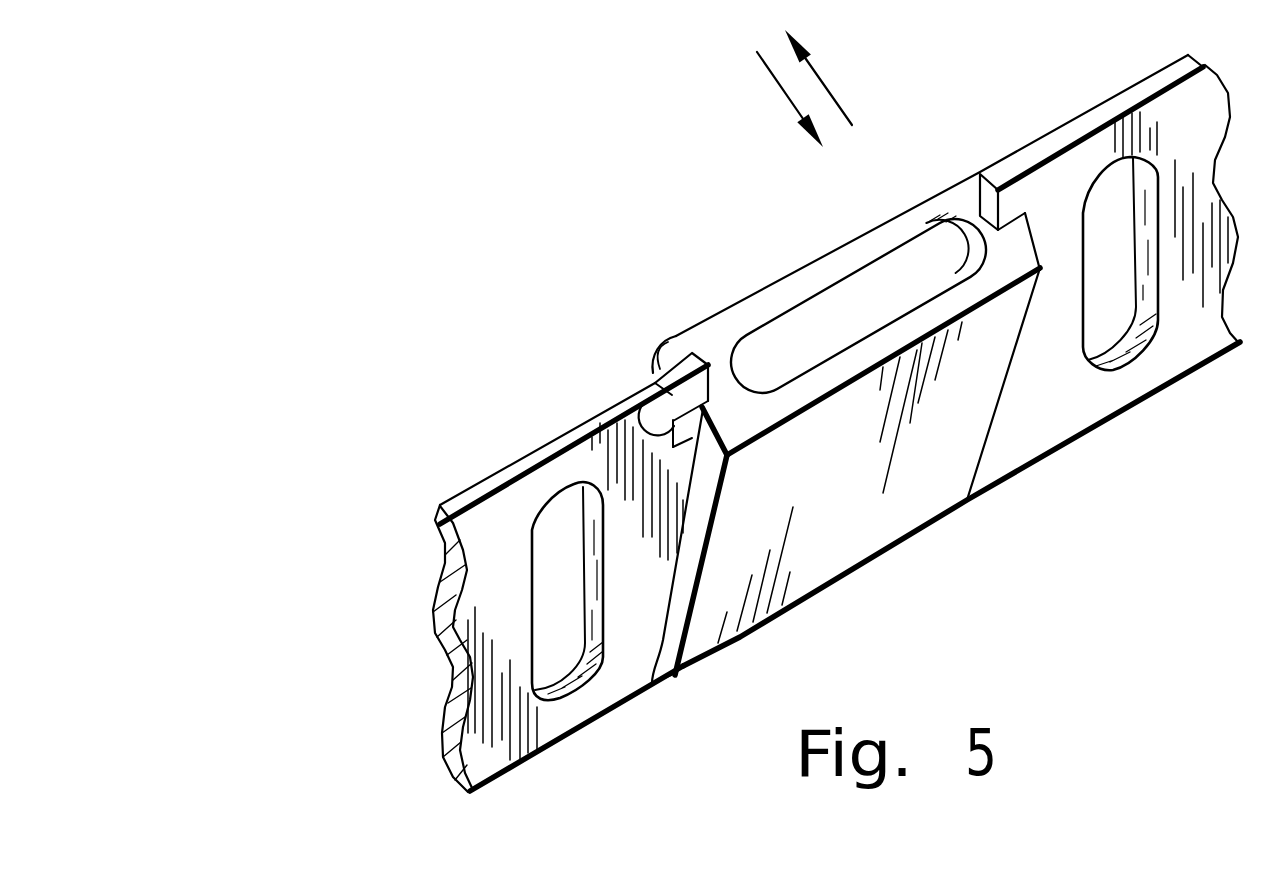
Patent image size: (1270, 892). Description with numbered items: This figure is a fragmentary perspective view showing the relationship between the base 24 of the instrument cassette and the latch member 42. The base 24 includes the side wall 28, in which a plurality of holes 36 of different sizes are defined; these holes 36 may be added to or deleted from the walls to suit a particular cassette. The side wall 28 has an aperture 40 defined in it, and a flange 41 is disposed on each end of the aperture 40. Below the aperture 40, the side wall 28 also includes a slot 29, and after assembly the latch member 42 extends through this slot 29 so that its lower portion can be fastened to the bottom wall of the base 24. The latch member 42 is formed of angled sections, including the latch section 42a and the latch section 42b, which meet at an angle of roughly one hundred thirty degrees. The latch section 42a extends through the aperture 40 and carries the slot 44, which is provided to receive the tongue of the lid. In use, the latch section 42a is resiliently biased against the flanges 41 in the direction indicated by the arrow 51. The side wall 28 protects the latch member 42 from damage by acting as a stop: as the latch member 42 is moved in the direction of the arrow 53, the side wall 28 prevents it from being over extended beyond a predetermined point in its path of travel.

The base 24 is at (328, 577).
The side wall 28 is at (618, 678).
The slot 29 is at (665, 676).
The holes 36 is at (533, 585).
The aperture 40 is at (644, 387).
The flange 41 is at (680, 400).
The latch member 42 is at (963, 125).
The latch section 42a is at (766, 300).
The latch section 42b is at (978, 397).
The slot 44 is at (821, 291).
The arrow 51 is at (790, 99).
The arrow 53 is at (828, 87).